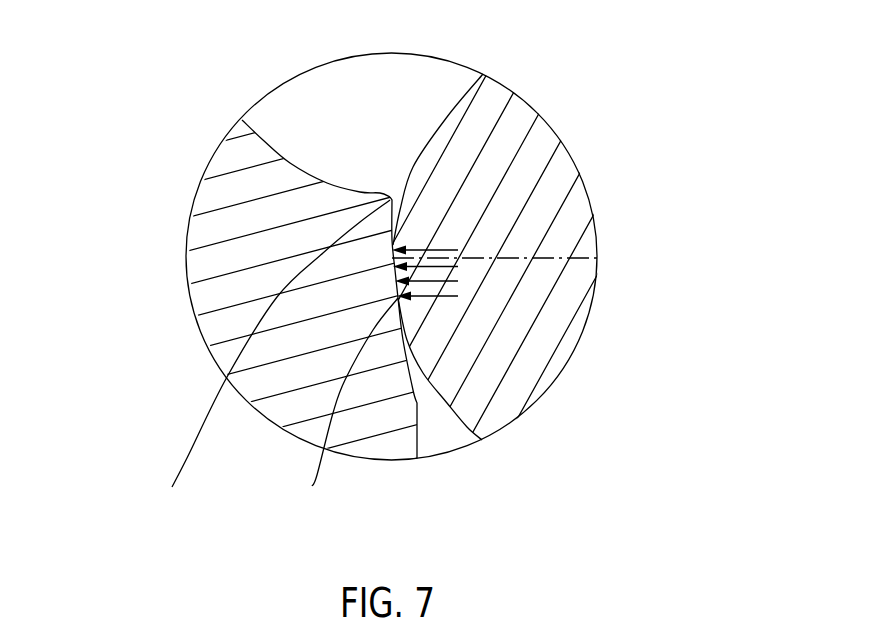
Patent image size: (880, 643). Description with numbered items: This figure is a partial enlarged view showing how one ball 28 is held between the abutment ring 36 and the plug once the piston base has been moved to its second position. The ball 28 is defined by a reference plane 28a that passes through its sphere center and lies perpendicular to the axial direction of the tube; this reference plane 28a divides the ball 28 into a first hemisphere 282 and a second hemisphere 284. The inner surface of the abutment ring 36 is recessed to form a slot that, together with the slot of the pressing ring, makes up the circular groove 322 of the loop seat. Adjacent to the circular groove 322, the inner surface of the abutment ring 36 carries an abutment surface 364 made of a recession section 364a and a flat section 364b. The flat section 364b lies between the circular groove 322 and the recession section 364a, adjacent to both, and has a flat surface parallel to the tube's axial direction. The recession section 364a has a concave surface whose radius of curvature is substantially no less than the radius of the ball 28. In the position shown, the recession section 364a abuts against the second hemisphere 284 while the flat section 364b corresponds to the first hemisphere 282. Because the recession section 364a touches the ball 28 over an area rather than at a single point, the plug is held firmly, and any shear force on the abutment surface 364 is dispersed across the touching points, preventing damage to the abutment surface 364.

The ball 28 is at (527, 252).
The reference plane 28a is at (527, 258).
The first hemisphere 282 is at (577, 213).
The second hemisphere 284 is at (569, 369).
The abutment ring 36 is at (215, 223).
The circular groove 322 is at (318, 120).
The abutment surface 364 is at (267, 382).
The recession section 364a is at (345, 408).
The flat section 364b is at (267, 359).